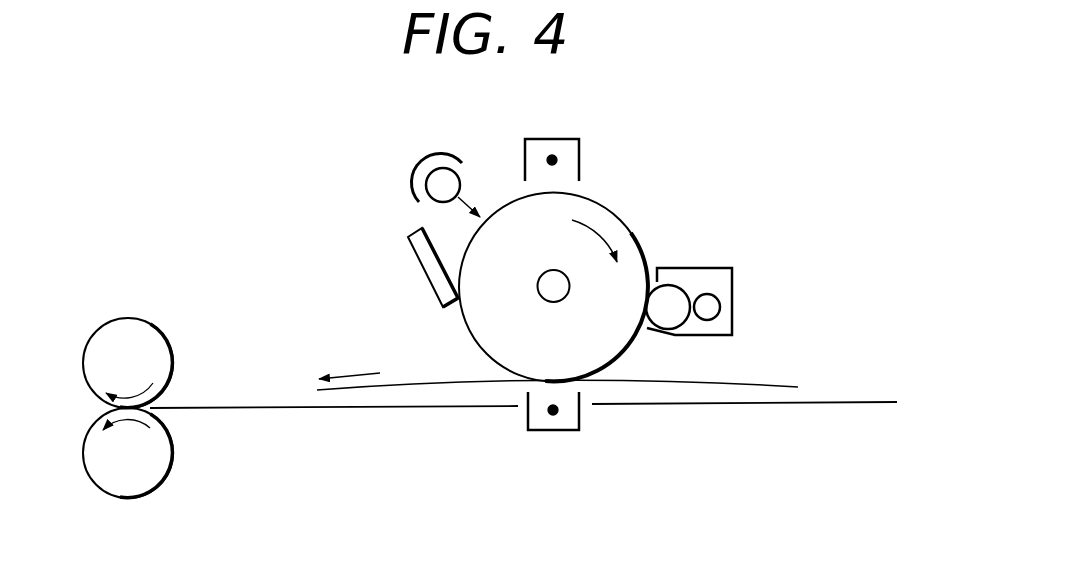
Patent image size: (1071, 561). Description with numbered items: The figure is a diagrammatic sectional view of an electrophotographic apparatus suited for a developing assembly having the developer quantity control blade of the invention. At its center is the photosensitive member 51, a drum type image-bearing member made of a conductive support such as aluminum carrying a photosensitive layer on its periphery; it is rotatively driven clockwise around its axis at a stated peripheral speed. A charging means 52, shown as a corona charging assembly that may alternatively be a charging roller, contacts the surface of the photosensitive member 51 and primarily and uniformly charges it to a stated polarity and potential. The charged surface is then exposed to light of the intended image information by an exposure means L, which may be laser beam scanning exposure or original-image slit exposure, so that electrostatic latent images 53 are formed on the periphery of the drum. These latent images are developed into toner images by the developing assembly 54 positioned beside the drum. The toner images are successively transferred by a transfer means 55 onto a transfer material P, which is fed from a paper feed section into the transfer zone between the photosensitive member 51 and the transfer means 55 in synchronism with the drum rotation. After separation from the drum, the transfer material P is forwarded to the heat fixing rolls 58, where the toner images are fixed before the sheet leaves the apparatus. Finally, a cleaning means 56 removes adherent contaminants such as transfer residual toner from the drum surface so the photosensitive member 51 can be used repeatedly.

The photosensitive member 51 is at (468, 240).
The charging means 52 is at (545, 138).
The electrostatic latent images 53 is at (633, 230).
The developing assembly 54 is at (735, 280).
The transfer means 55 is at (553, 432).
The cleaning means 56 is at (422, 272).
The heat fixing rolls 58 is at (142, 318).
The exposure means L is at (608, 201).
The transfer material P is at (770, 382).